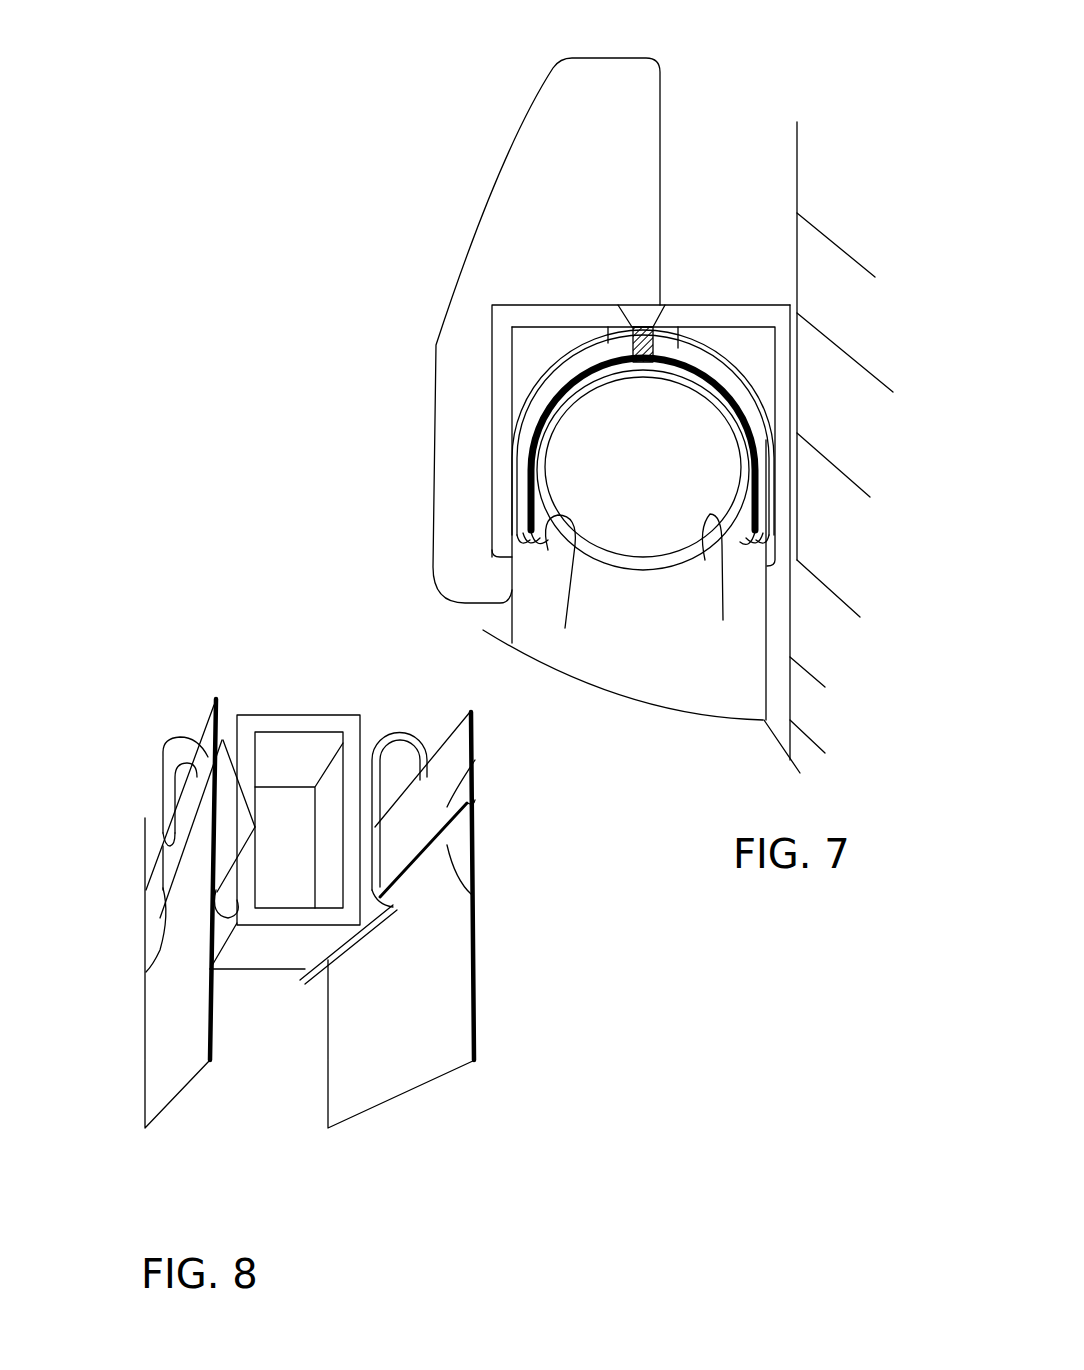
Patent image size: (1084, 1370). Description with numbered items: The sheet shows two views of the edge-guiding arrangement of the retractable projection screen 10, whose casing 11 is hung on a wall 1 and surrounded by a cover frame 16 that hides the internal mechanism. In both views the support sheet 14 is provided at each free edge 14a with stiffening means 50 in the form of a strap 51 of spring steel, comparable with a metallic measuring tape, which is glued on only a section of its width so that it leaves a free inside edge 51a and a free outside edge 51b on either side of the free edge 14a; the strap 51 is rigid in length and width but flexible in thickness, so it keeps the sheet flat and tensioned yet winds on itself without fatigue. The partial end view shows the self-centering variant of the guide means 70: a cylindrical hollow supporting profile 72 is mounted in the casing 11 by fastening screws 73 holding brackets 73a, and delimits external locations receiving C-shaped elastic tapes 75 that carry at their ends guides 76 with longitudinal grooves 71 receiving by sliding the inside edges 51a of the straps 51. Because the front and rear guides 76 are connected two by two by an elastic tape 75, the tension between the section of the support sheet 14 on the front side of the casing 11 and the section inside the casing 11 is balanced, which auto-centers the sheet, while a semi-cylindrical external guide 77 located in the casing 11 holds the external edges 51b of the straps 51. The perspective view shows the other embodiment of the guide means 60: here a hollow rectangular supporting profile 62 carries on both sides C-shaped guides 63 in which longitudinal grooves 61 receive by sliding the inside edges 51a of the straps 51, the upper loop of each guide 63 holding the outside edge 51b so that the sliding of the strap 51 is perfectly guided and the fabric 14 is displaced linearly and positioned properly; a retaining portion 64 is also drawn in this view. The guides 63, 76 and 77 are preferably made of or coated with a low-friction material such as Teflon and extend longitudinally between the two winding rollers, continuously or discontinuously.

In FIG. 7, the wall 1 is at (843, 182).
In FIG. 7, the retractable projection screen 10 is at (754, 110).
In FIG. 7, the casing 11 is at (768, 302).
In FIG. 7, the support sheet 14 is at (500, 612).
In FIG. 8, the support sheet 14 is at (167, 1042).
In FIG. 8, the free edges of support sheet 14a is at (147, 968).
In FIG. 7, the cover frame 16 is at (643, 172).
In FIG. 8, the stiffening means 50 is at (497, 853).
In FIG. 7, the strap 51 is at (527, 513).
In FIG. 8, the strap 51 is at (147, 913).
In FIG. 7, the free inside edge of strap 51a is at (510, 523).
In FIG. 8, the free inside edge of strap 51a is at (263, 853).
In FIG. 7, the free outside edge of strap 51b is at (510, 453).
In FIG. 8, the free outside edge of strap 51b is at (207, 697).
In FIG. 8, the guide means 60 is at (195, 658).
In FIG. 8, the longitudinal grooves 61 is at (240, 890).
In FIG. 8, the supporting profile 62 is at (265, 713).
In FIG. 8, the C-shaped guides 63 is at (172, 750).
In FIG. 8, the retaining portion 64 is at (144, 818).
In FIG. 7, the guide means 70 is at (525, 367).
In FIG. 7, the longitudinal grooves 71 is at (644, 587).
In FIG. 7, the supporting profile 72 is at (593, 552).
In FIG. 7, the fastening screws 73 is at (645, 320).
In FIG. 7, the brackets 73a is at (728, 372).
In FIG. 7, the C-shaped elastic tapes 75 is at (740, 428).
In FIG. 7, the guides 76 is at (553, 507).
In FIG. 7, the semi-cylindrical external guide 77 is at (527, 397).